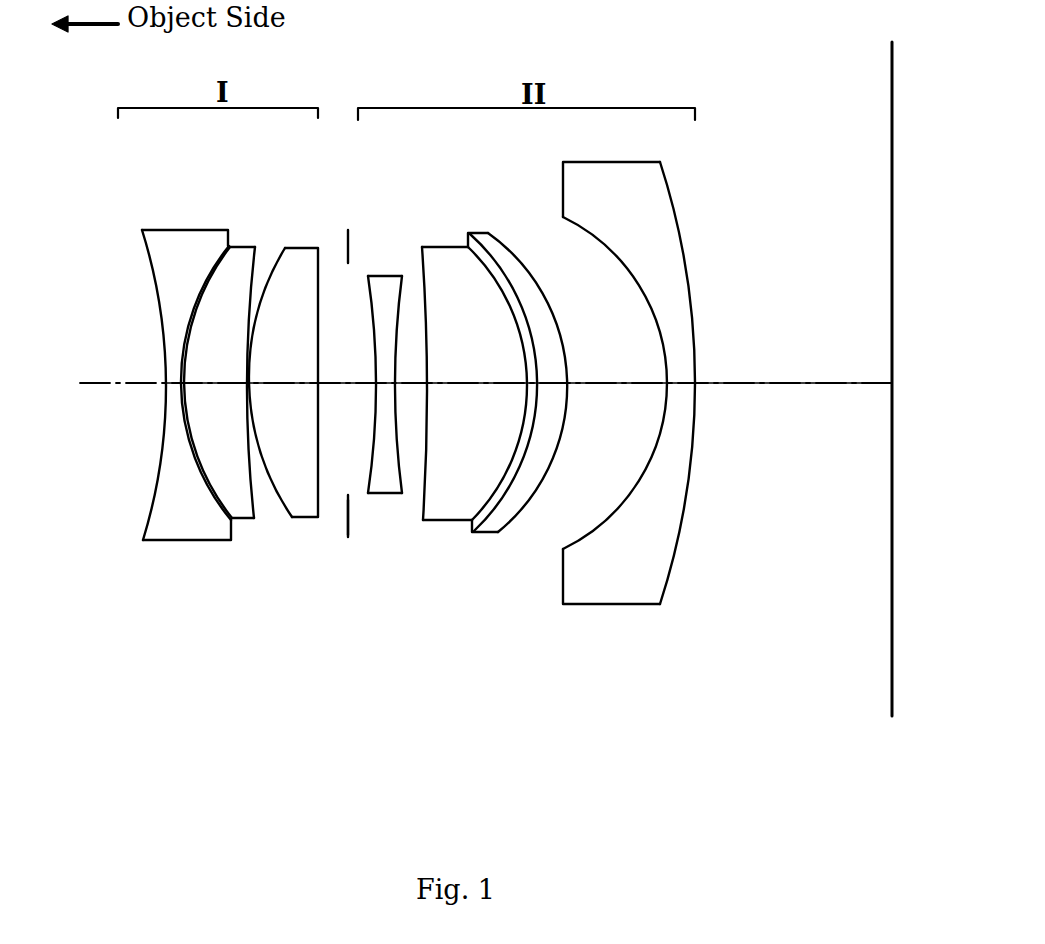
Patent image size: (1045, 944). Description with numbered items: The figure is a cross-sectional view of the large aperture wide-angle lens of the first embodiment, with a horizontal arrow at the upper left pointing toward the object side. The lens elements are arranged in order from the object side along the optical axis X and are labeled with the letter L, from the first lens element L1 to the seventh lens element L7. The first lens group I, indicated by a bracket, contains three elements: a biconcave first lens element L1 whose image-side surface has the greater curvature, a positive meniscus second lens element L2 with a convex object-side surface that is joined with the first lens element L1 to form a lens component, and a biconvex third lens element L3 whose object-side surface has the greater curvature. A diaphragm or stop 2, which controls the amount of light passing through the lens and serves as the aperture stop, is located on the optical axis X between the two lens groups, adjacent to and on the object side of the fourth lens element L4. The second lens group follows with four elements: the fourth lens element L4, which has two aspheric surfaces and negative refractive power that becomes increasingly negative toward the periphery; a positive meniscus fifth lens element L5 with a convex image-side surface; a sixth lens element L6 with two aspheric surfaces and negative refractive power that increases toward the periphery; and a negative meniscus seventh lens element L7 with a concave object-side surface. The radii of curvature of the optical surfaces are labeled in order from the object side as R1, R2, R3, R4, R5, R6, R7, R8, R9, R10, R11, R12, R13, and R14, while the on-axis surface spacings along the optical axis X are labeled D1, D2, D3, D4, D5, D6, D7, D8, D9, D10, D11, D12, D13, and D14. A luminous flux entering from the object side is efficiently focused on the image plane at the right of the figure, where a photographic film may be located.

The first lens element L1 is at (195, 362).
The second lens element L2 is at (245, 351).
The third lens element L3 is at (292, 348).
The fourth lens element L4 is at (401, 360).
The fifth lens element L5 is at (494, 358).
The sixth lens element L6 is at (547, 359).
The seventh lens element L7 is at (663, 365).
The stop 2 is at (349, 232).
The optical axis X is at (93, 380).
The first lens group I is at (890, 68).
The radius of curvature R1 is at (160, 290).
The radius of curvature R2 is at (233, 246).
The radius of curvature R3 is at (250, 290).
The radius of curvature R4 is at (262, 283).
The radius of curvature R5 is at (300, 208).
The radius of curvature R6 is at (350, 520).
The radius of curvature R7 is at (372, 380).
The radius of curvature R8 is at (400, 382).
The radius of curvature R9 is at (424, 320).
The radius of curvature R10 is at (546, 284).
The radius of curvature R11 is at (540, 343).
The radius of curvature R12 is at (576, 372).
The radius of curvature R13 is at (646, 300).
The radius of curvature R14 is at (694, 300).
The on-axis surface spacing D1 is at (168, 401).
The on-axis surface spacing D2 is at (180, 380).
The on-axis surface spacing D3 is at (242, 378).
The on-axis surface spacing D4 is at (306, 379).
The on-axis surface spacing D5 is at (341, 392).
The on-axis surface spacing D6 is at (362, 381).
The on-axis surface spacing D7 is at (382, 420).
The on-axis surface spacing D8 is at (414, 392).
The on-axis surface spacing D9 is at (486, 408).
The on-axis surface spacing D10 is at (560, 405).
The on-axis surface spacing D11 is at (571, 400).
The on-axis surface spacing D12 is at (600, 381).
The on-axis surface spacing D13 is at (695, 360).
The on-axis surface spacing D14 is at (780, 380).